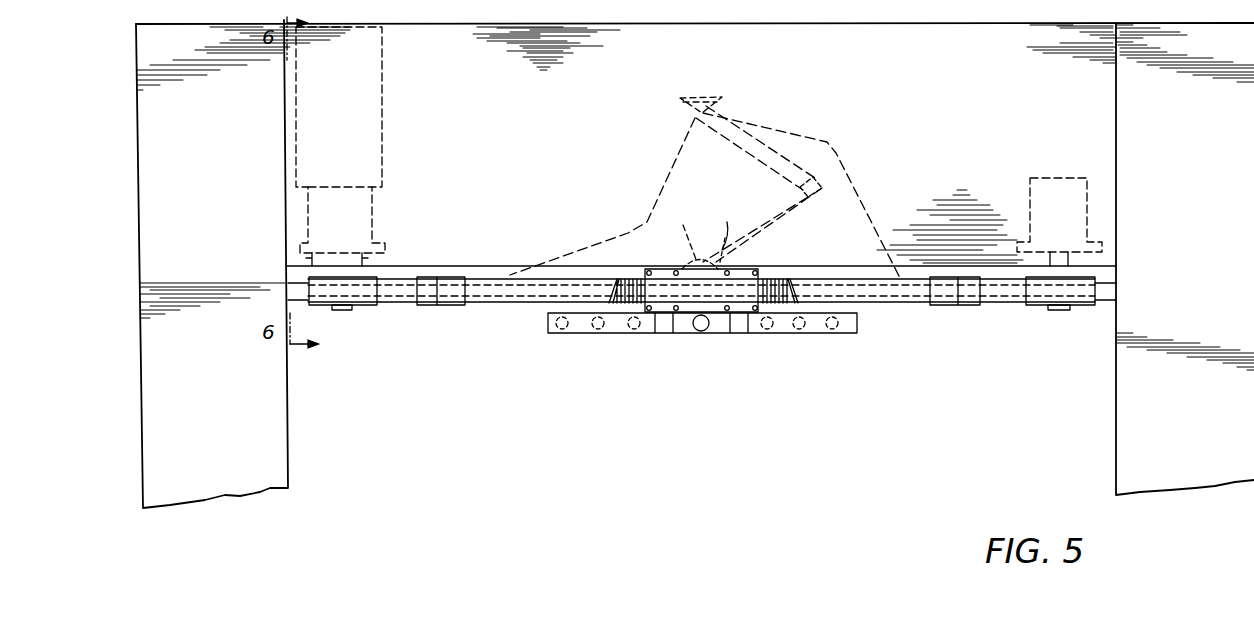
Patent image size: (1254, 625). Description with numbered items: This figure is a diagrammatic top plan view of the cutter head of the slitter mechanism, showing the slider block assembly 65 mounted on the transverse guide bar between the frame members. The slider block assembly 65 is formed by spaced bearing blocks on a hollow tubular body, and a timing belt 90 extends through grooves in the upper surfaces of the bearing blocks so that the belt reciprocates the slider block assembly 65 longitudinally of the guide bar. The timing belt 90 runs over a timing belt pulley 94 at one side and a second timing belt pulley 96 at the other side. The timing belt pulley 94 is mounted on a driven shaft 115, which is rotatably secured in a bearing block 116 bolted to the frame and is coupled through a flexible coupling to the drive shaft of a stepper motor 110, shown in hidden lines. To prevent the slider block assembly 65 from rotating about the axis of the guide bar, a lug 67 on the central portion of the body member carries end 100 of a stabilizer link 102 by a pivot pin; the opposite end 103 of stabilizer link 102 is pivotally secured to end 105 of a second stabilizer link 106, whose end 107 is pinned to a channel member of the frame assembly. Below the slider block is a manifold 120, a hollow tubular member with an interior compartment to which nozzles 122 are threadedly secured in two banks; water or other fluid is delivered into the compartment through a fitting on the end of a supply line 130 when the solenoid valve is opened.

The slider block assembly 65 is at (650, 270).
The lug 67 is at (686, 246).
The timing belt 90 is at (462, 295).
The timing belt pulley 94 is at (368, 278).
The second timing belt pulley 96 is at (1040, 307).
The end of stabilizer link 100 is at (708, 235).
The stabilizer link 102 is at (775, 225).
The end of stabilizer link 103 is at (797, 188).
The end of second stabilizer link 105 is at (822, 178).
The second stabilizer link 106 is at (752, 133).
The end of stabilizer link 107 is at (720, 112).
The stepper motor 110 is at (375, 97).
The driven shaft 115 is at (350, 310).
The bearing block 116 is at (1060, 310).
The manifold 120 is at (857, 321).
The nozzles 122 is at (630, 335).
The supply line 130 is at (701, 333).